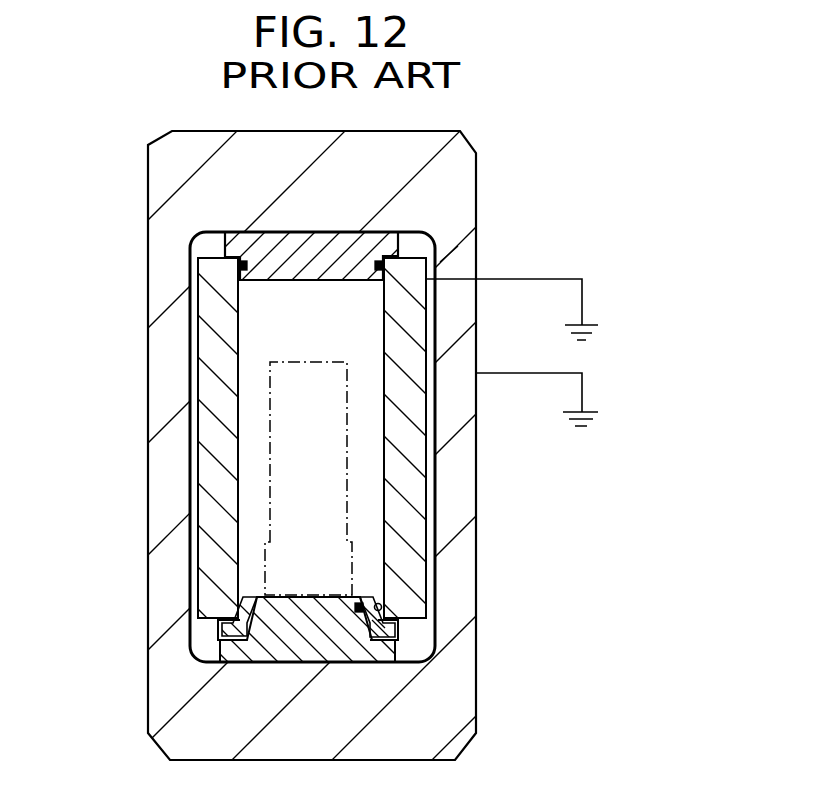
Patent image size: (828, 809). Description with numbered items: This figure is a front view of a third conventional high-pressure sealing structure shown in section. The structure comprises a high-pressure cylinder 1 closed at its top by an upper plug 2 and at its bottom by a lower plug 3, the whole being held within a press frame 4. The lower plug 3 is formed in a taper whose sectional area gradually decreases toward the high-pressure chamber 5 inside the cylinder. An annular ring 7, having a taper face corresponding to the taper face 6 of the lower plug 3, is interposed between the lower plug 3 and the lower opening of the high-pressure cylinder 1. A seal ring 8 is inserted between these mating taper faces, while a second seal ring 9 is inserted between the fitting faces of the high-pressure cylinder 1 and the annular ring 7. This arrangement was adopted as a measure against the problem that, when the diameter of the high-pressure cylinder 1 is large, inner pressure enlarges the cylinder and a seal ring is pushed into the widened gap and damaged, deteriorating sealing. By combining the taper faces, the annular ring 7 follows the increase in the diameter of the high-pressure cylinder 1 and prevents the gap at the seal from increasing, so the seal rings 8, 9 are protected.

The high-pressure cylinder 1 is at (410, 345).
The upper plug 2 is at (350, 236).
The lower plug 3 is at (277, 652).
The press frame 4 is at (453, 253).
The high-pressure chamber 5 is at (367, 457).
The taper face 6 is at (372, 636).
The annular ring 7 is at (395, 630).
The seal ring 8 is at (362, 602).
The seal ring 9 is at (380, 605).